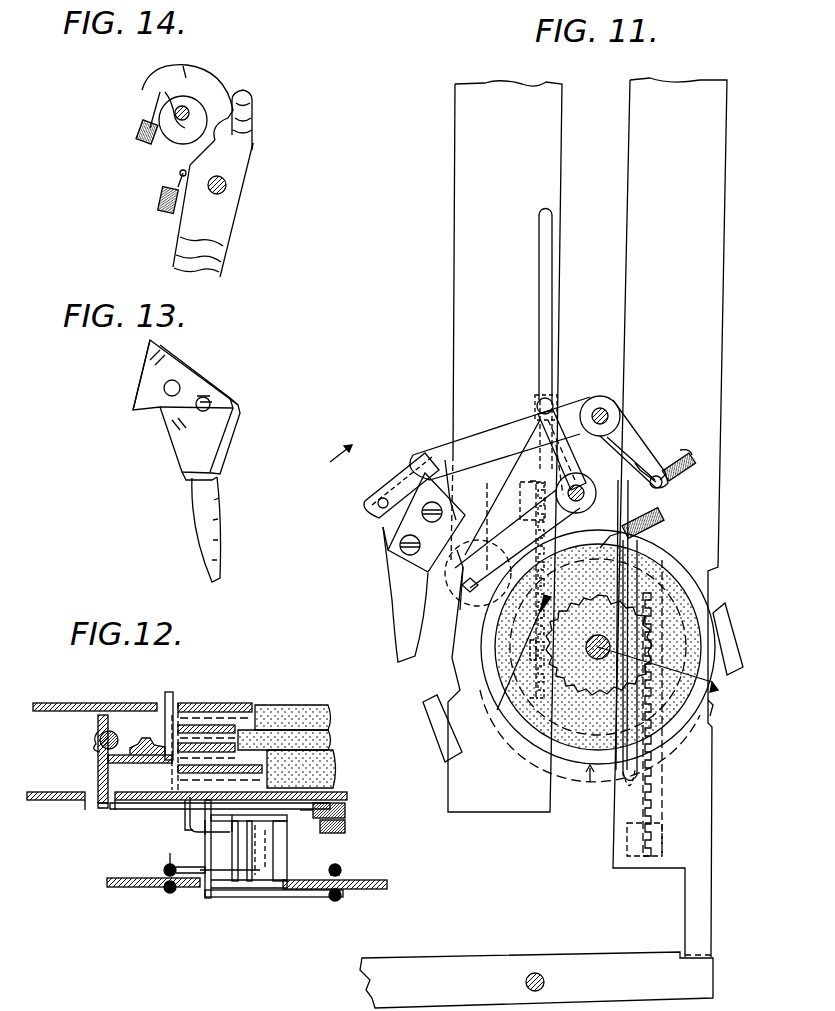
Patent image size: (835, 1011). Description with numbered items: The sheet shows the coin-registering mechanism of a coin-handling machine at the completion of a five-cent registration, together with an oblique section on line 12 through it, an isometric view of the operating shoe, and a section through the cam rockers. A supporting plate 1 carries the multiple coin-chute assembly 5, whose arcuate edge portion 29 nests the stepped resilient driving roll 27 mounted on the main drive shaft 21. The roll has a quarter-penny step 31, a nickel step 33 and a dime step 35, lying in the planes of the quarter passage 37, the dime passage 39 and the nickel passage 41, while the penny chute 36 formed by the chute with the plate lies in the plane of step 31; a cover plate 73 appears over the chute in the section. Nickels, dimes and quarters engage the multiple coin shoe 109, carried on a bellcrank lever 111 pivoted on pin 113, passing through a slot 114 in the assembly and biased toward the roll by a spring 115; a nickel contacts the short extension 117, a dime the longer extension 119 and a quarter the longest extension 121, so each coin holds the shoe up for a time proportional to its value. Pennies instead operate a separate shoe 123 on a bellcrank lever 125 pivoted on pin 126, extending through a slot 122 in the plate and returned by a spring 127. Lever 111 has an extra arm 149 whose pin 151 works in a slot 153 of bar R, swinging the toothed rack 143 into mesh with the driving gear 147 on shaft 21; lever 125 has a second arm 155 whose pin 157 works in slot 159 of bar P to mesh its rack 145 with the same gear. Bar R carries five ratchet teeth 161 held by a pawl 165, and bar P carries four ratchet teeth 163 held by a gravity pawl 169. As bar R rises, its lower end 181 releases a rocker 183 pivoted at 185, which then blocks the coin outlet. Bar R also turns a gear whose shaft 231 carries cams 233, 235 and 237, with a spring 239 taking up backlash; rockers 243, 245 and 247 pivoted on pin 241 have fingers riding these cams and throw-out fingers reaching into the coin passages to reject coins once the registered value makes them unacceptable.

In FIG. 12, the supporting plate 1 is at (45, 802).
In FIG. 12, the multiple coin-chute assembly 5 is at (252, 700).
In FIG. 11, the section line 12— 12 is at (332, 462).
In FIG. 11, the main drive shaft 21 is at (662, 666).
In FIG. 11, the stepped resilient driving roll 27 is at (598, 778).
In FIG. 12, the arcuate edge portion 29 is at (262, 708).
In FIG. 12, the 25¢—1¢ step 31 is at (310, 777).
In FIG. 11, the 25¢—1¢ step 31 is at (540, 750).
In FIG. 12, the 5¢ step 33 is at (328, 710).
In FIG. 11, the 5¢ step 33 is at (500, 700).
In FIG. 12, the 10¢ step 35 is at (330, 740).
In FIG. 11, the 10¢ step 35 is at (495, 692).
In FIG. 12, the 1¢ chute 36 is at (268, 862).
In FIG. 12, the 25¢ coin passage 37 is at (182, 812).
In FIG. 12, the 10¢ coin passage 39 is at (188, 715).
In FIG. 12, the 5¢ coin passage 41 is at (218, 703).
In FIG. 12, the cover plate 73 is at (65, 703).
In FIG. 13, the multiple coin shoe 109 is at (228, 370).
In FIG. 12, the multiple coin shoe 109 is at (92, 755).
In FIG. 11, the multiple coin shoe 109 is at (382, 562).
In FIG. 12, the bellcrank lever 111 is at (150, 810).
In FIG. 11, the bellcrank lever 111 is at (503, 433).
In FIG. 12, the pin 113 is at (223, 885).
In FIG. 11, the pin 113 is at (604, 408).
In FIG. 12, the slot 114 is at (95, 812).
In FIG. 11, the slot 114 is at (365, 505).
In FIG. 12, the spring 115 is at (346, 812).
In FIG. 11, the spring 115 is at (680, 446).
In FIG. 13, the short extension 117 is at (165, 425).
In FIG. 12, the short extension 117 is at (166, 700).
In FIG. 11, the short extension 117 is at (448, 470).
In FIG. 13, the longer extension 119 is at (184, 465).
In FIG. 12, the longer extension 119 is at (164, 738).
In FIG. 11, the longer extension 119 is at (428, 572).
In FIG. 13, the longest extension 121 is at (216, 520).
In FIG. 12, the longest extension 121 is at (166, 772).
In FIG. 11, the longest extension 121 is at (407, 604).
In FIG. 11, the slot 122 is at (478, 577).
In FIG. 12, the 1¢ shoe 123 is at (178, 830).
In FIG. 11, the 1¢ shoe 123 is at (520, 465).
In FIG. 12, the bellcrank lever 125 is at (207, 835).
In FIG. 11, the bellcrank lever 125 is at (515, 522).
In FIG. 12, the pin 126 is at (287, 866).
In FIG. 11, the pin 126 is at (598, 490).
In FIG. 12, the spring 127 is at (346, 828).
In FIG. 11, the spring 127 is at (658, 512).
In FIG. 11, the toothed rack 143 is at (630, 860).
In FIG. 11, the toothed rack 145 is at (545, 700).
In FIG. 11, the driving gear 147 is at (572, 777).
In FIG. 12, the extra arm 149 is at (266, 898).
In FIG. 11, the extra arm 149 is at (634, 444).
In FIG. 12, the pin 151 is at (341, 870).
In FIG. 11, the pin 151 is at (650, 555).
In FIG. 12, the slot 153 is at (348, 895).
In FIG. 11, the slot 153 is at (630, 785).
In FIG. 12, the second arm 155 is at (164, 868).
In FIG. 11, the second arm 155 is at (548, 462).
In FIG. 12, the pin 157 is at (170, 894).
In FIG. 11, the pin 157 is at (540, 384).
In FIG. 12, the slot 159 is at (150, 898).
In FIG. 11, the slot 159 is at (548, 270).
In FIG. 11, the ratchet teeth 161 is at (712, 716).
In FIG. 11, the ratchet teeth 163 is at (452, 618).
In FIG. 11, the pawl 165 is at (728, 636).
In FIG. 11, the pawl 169 is at (438, 744).
In FIG. 11, the lower end 181 is at (696, 948).
In FIG. 11, the rocker 183 is at (612, 962).
In FIG. 11, the pivot 185 is at (535, 972).
In FIG. 14, the shaft 231 is at (178, 126).
In FIG. 14, the cam 233 is at (242, 137).
In FIG. 14, the cam 235 is at (183, 78).
In FIG. 14, the cam 237 is at (160, 93).
In FIG. 14, the spring 239 is at (138, 135).
In FIG. 14, the pin 241 is at (227, 190).
In FIG. 14, the rocker 243 is at (224, 225).
In FIG. 14, the rocker 245 is at (216, 255).
In FIG. 14, the rocker 247 is at (215, 274).